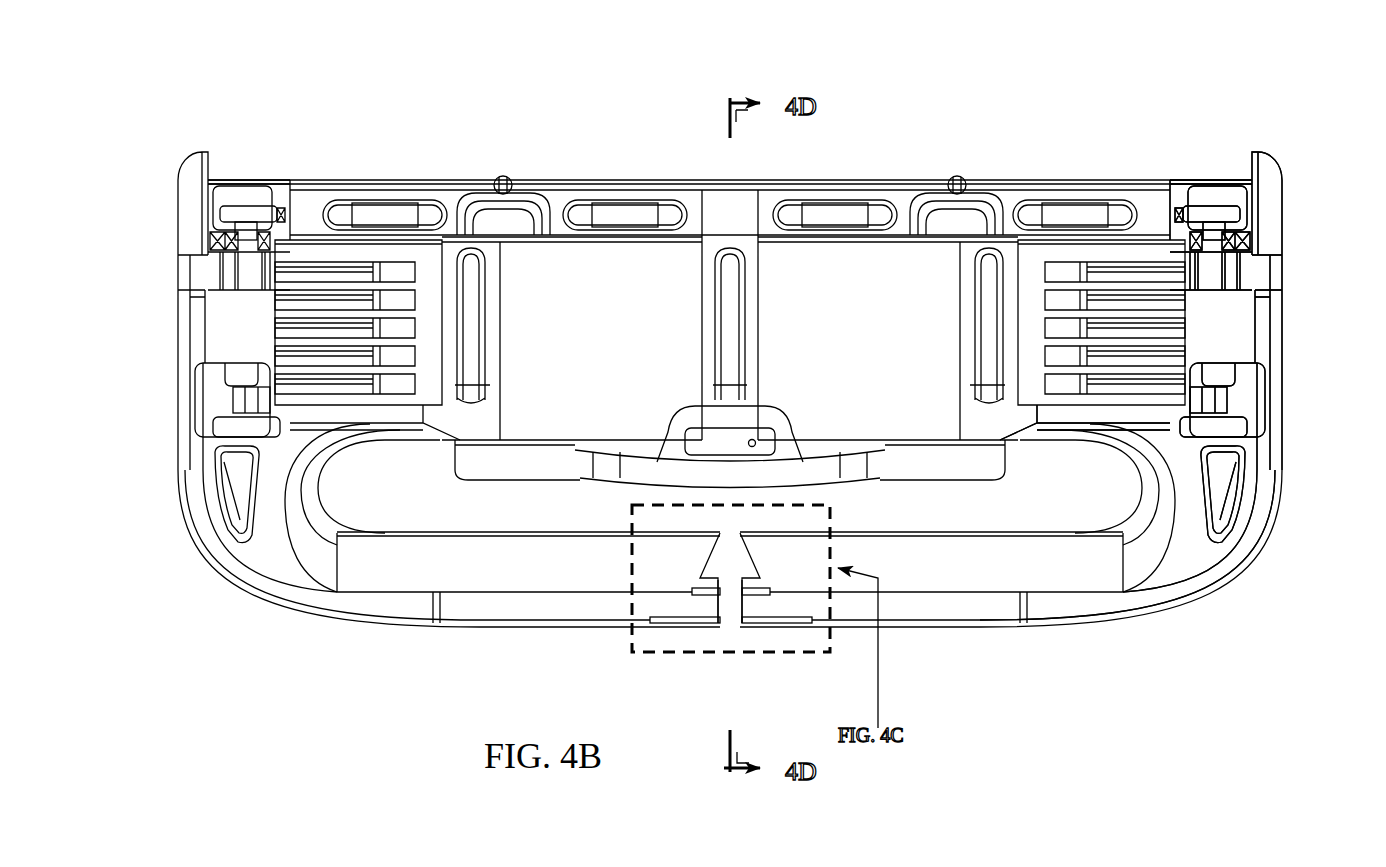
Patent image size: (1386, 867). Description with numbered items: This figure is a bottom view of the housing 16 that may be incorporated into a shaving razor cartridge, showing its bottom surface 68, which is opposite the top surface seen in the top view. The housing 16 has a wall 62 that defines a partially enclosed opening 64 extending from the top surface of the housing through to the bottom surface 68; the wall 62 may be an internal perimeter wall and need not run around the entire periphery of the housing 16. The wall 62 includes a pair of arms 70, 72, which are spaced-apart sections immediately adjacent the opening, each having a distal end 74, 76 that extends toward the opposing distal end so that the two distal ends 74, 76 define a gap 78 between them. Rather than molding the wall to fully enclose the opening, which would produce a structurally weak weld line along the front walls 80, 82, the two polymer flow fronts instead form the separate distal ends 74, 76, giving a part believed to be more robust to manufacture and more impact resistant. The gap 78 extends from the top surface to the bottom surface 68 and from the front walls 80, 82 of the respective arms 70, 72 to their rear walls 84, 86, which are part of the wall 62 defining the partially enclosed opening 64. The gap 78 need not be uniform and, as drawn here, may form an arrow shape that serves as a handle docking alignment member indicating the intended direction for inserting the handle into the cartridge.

The housing 16 is at (167, 103).
The wall 62 is at (1080, 525).
The partially enclosed opening 64 is at (388, 502).
The bottom surface 68 is at (1258, 382).
The arm 70 is at (452, 650).
The arm 72 is at (1005, 652).
The distal end 74 is at (742, 604).
The distal end 76 is at (718, 604).
The gap 78 is at (732, 632).
The front wall 80 is at (918, 633).
The front wall 82 is at (545, 633).
The rear wall 84 is at (1018, 531).
The rear wall 86 is at (442, 531).